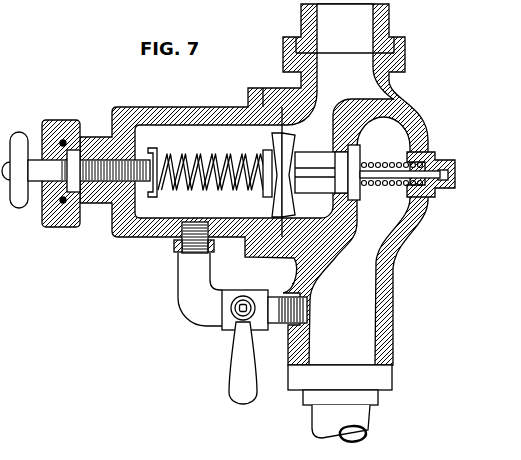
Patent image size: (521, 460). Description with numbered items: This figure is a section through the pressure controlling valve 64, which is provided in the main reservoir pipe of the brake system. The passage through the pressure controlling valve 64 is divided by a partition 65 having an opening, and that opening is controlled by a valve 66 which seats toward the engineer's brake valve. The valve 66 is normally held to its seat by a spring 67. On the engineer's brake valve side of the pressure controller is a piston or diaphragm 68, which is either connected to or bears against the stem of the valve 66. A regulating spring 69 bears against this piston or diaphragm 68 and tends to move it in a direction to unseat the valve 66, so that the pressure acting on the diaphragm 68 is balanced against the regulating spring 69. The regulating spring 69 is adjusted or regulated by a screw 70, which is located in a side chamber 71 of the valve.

The pressure controlling valve 64 is at (254, 184).
The partition 65 is at (349, 209).
The valve 66 is at (360, 148).
The spring 67 is at (374, 166).
The piston or diaphragm 68 is at (277, 152).
The regulating spring 69 is at (210, 166).
The screw 70 is at (107, 206).
The side chamber 71 is at (190, 221).